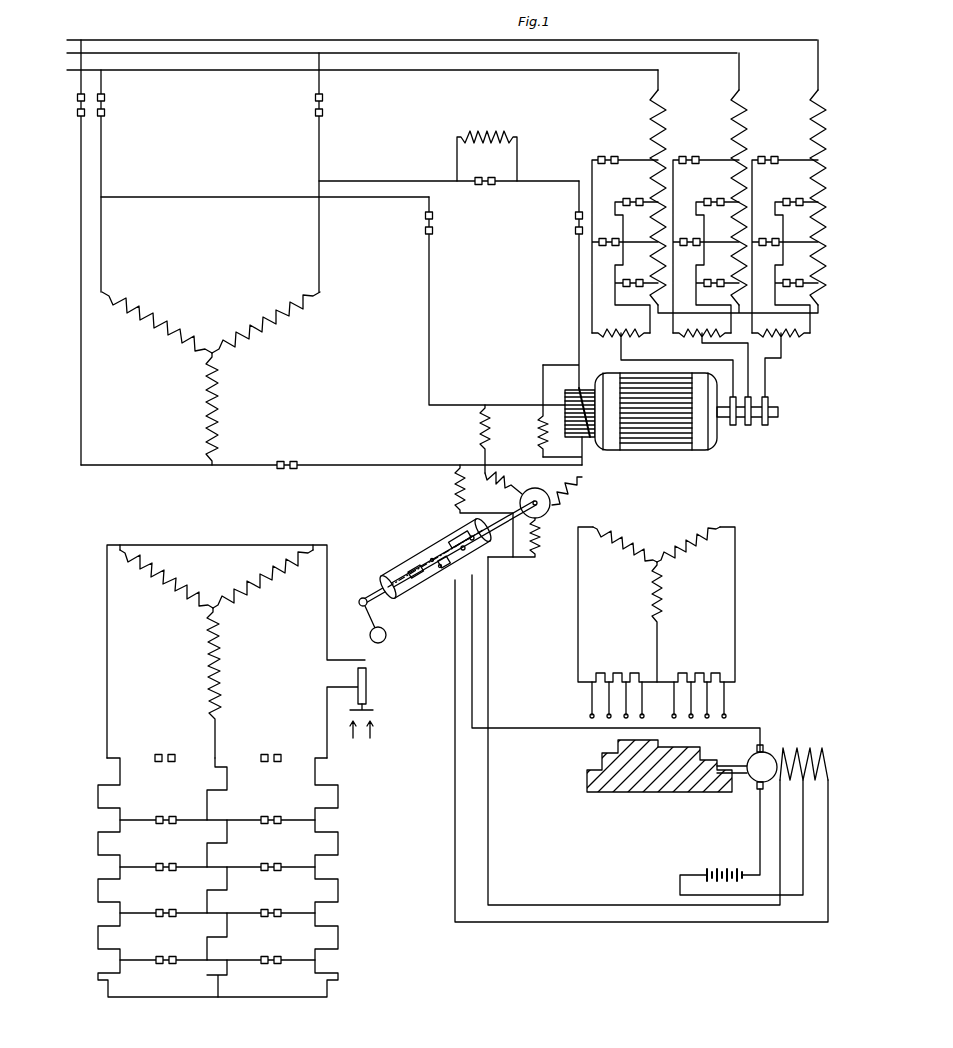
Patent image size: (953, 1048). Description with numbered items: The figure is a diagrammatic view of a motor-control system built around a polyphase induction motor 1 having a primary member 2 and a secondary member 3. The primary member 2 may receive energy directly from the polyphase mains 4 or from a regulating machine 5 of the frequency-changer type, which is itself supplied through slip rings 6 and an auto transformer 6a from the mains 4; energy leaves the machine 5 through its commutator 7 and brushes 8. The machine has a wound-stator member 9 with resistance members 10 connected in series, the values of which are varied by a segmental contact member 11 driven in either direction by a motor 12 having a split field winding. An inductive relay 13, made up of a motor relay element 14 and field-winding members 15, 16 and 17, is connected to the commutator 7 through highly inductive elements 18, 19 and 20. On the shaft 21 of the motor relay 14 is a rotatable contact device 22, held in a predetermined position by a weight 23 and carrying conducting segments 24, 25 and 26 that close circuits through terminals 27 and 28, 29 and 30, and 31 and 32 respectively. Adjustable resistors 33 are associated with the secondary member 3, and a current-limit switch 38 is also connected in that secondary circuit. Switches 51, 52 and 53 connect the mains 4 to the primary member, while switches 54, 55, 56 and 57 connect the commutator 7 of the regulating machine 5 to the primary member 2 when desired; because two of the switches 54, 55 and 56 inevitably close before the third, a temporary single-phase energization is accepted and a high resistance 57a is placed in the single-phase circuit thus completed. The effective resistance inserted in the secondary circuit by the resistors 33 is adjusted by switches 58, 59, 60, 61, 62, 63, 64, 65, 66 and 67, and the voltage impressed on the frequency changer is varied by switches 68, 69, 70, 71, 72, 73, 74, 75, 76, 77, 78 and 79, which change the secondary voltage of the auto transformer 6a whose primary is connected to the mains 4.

The induction motor 1 is at (236, 628).
The primary member 2 is at (255, 338).
The secondary member 3 is at (222, 674).
The polyphase mains 4 is at (402, 70).
The regulating machine 5 is at (656, 592).
The slip rings 6 is at (733, 425).
The auto transformer 6a is at (738, 176).
The commutator 7 is at (568, 436).
The brushes 8 is at (588, 441).
The wound-stator member 9 is at (673, 562).
The resistance members 10 is at (698, 673).
The segmental contact member 11 is at (662, 793).
The motor 12 is at (754, 811).
The inductive relay 13 is at (412, 545).
The motor relay element 14 is at (521, 503).
The field-winding member 15 is at (538, 539).
The field-winding member 16 is at (504, 487).
The field-winding member 17 is at (566, 490).
The inductive element 18 is at (455, 483).
The inductive element 19 is at (480, 430).
The inductive element 20 is at (537, 428).
The shaft 21 is at (476, 540).
The rotatable contact device 22 is at (380, 606).
The weight 23 is at (384, 640).
The conducting segment 24 is at (410, 570).
The conducting segment 25 is at (440, 560).
The conducting segment 26 is at (455, 538).
The terminal 27 is at (441, 568).
The terminal 28 is at (433, 562).
The terminal 29 is at (470, 590).
The terminal 30 is at (458, 578).
The terminal 31 is at (474, 566).
The terminal 32 is at (466, 550).
The adjustable resistors 33 is at (320, 962).
The current-limit switch 38 is at (367, 687).
The switch 51 is at (77, 104).
The switch 52 is at (105, 104).
The switch 53 is at (323, 104).
The switch 54 is at (293, 469).
The switch 55 is at (425, 222).
The switch 56 is at (575, 222).
The switch 57 is at (485, 186).
The high resistance 57a is at (485, 136).
The switch 58 is at (166, 754).
The switch 59 is at (274, 754).
The switch 60 is at (168, 816).
The switch 61 is at (272, 816).
The switch 62 is at (168, 863).
The switch 63 is at (272, 863).
The switch 64 is at (168, 909).
The switch 65 is at (272, 909).
The switch 66 is at (168, 956).
The switch 67 is at (272, 956).
The switch 68 is at (607, 152).
The switch 69 is at (688, 152).
The switch 70 is at (767, 152).
The switch 71 is at (633, 194).
The switch 72 is at (714, 194).
The switch 73 is at (793, 194).
The switch 74 is at (607, 234).
The switch 75 is at (688, 234).
The switch 76 is at (767, 234).
The switch 77 is at (633, 275).
The switch 78 is at (714, 275).
The switch 79 is at (793, 275).